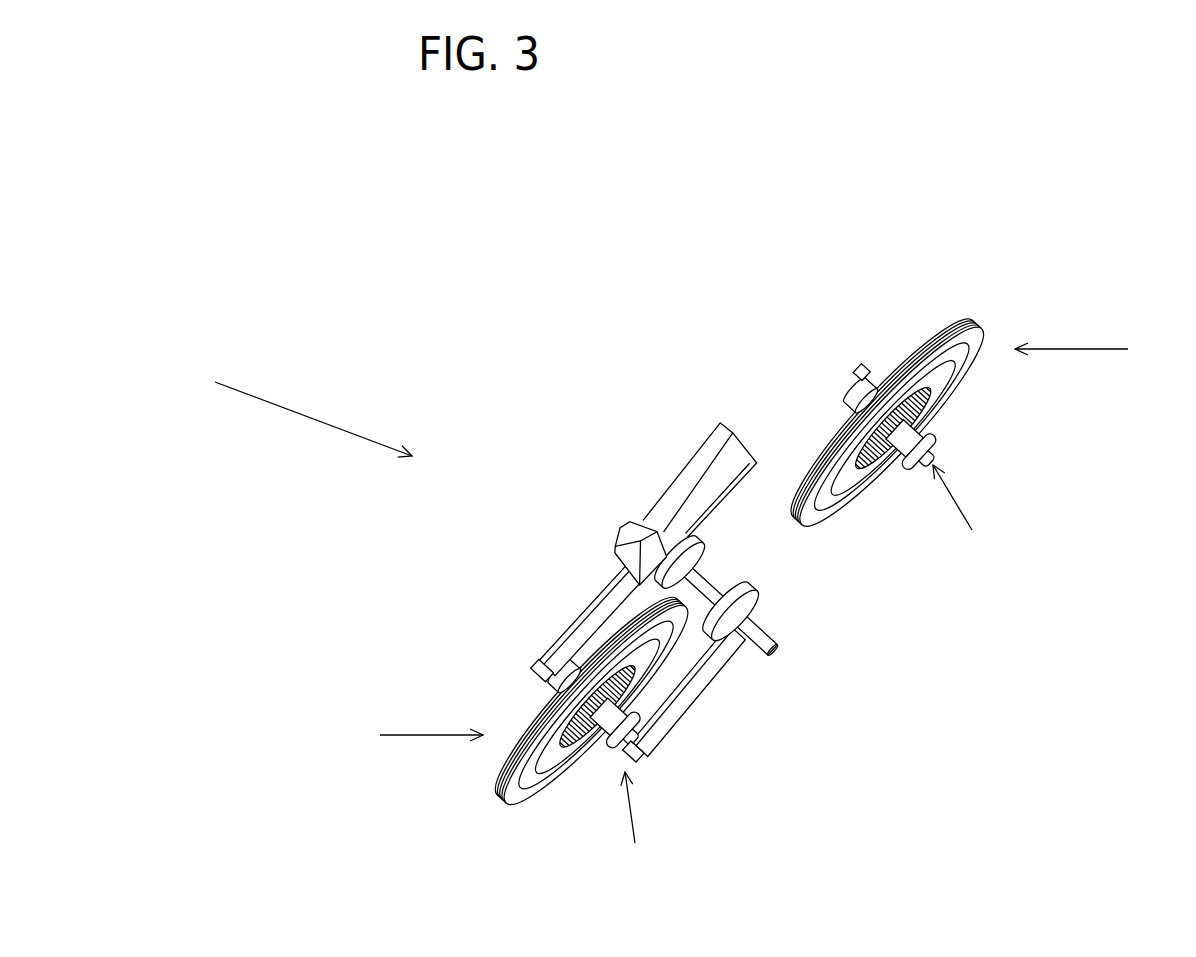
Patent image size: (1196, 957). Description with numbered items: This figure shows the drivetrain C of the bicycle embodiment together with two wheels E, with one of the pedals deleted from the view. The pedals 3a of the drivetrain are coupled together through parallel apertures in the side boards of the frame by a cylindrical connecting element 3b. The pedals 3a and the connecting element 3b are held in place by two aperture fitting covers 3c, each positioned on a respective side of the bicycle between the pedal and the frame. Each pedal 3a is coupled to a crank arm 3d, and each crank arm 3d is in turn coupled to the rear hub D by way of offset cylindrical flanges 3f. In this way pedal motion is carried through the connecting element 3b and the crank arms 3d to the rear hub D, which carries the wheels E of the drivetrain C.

The pedal 3a is at (720, 438).
The cylindrical connecting element 3b is at (715, 576).
The aperture fitting cover 3c is at (752, 591).
The crank arm 3d is at (537, 668).
The offset cylindrical flange 3f is at (865, 372).
The drivetrain C is at (291, 406).
The rear hub D is at (810, 681).
The wheel E is at (755, 543).